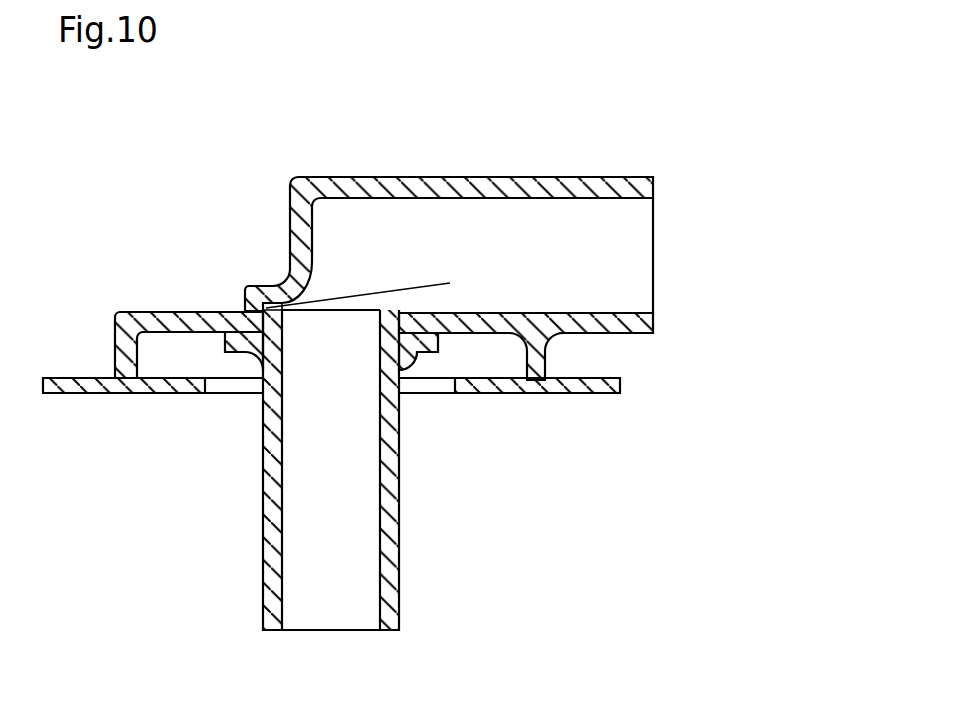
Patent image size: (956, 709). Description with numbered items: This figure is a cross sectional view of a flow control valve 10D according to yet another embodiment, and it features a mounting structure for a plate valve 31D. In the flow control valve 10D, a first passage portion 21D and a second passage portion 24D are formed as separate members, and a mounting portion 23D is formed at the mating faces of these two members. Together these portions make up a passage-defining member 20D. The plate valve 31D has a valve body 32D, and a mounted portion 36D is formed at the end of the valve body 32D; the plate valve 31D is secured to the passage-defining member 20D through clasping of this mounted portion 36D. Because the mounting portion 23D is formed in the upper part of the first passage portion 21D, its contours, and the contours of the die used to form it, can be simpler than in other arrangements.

The flow control valve 10D is at (221, 174).
The passage-defining member 20D is at (168, 195).
The first passage portion 21D is at (234, 316).
The mounting portion 23D is at (263, 350).
The second passage portion 24D is at (290, 215).
The plate valve 31D is at (413, 127).
The valve body 32D is at (410, 300).
The mounted portion 36D is at (322, 290).